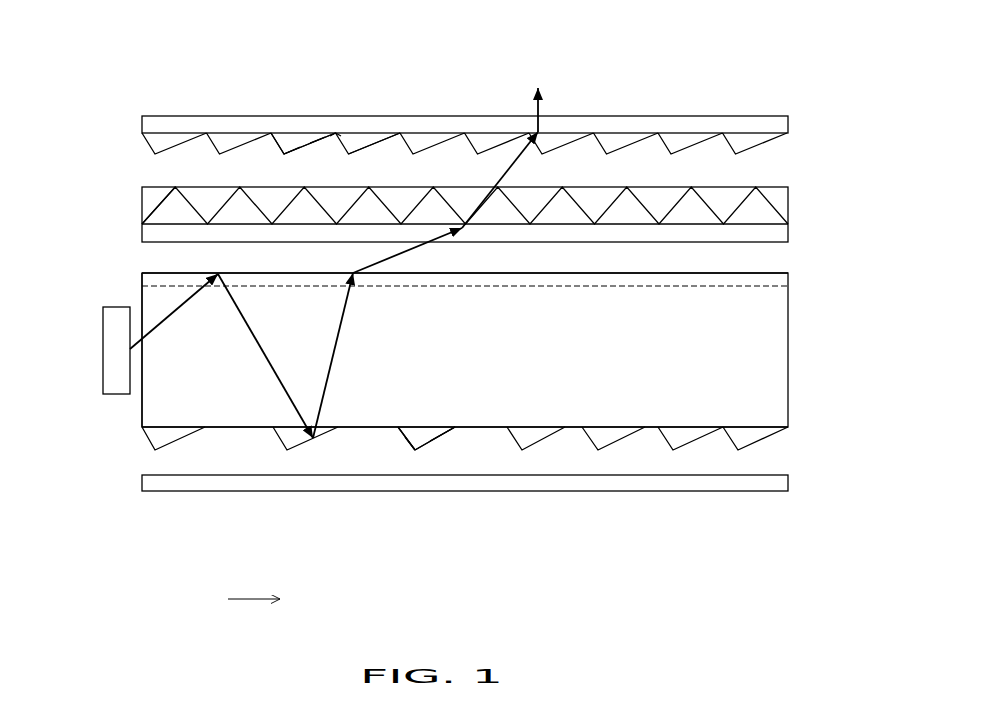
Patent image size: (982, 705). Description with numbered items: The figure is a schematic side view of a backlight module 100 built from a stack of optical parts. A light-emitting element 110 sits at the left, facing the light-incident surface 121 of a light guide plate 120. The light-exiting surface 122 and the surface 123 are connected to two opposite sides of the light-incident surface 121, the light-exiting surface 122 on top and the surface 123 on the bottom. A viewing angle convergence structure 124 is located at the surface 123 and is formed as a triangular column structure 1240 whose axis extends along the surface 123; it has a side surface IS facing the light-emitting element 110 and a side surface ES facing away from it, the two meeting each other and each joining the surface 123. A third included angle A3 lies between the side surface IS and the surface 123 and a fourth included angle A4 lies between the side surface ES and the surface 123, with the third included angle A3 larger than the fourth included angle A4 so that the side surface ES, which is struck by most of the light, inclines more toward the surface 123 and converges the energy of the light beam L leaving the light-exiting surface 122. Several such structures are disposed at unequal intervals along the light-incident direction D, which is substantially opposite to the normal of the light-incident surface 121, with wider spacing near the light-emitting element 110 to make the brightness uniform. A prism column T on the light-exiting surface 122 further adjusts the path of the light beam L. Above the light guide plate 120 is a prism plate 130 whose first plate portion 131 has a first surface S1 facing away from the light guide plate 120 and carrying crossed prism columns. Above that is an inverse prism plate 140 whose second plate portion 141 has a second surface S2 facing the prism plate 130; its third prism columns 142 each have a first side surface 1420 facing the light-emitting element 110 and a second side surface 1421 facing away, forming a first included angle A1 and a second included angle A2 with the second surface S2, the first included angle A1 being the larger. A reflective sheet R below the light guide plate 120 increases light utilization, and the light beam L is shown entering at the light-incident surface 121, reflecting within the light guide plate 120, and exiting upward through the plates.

The backlight module 100 is at (97, 56).
The light-emitting element 110 is at (108, 356).
The light guide plate 120 is at (790, 348).
The light-incident surface 121 is at (140, 408).
The light-exiting surface 122 is at (172, 287).
The surface 123 is at (233, 430).
The viewing angle convergence structure 124 is at (481, 507).
The triangular column structure 1240 is at (747, 440).
The prism plate 130 is at (790, 230).
The first plate portion 131 is at (143, 234).
The inverse prism plate 140 is at (790, 123).
The second plate portion 141 is at (138, 117).
The third prism columns 142 is at (140, 138).
The first side surface 1420 is at (270, 154).
The second side surface 1421 is at (316, 136).
The first included angle A1 is at (300, 153).
The second included angle A2 is at (321, 152).
The third included angle A3 is at (410, 447).
The fourth included angle A4 is at (449, 434).
The first surface S1 is at (178, 222).
The second surface S2 is at (373, 138).
The side surface IS is at (404, 443).
The side surface ES is at (437, 442).
The prism column T is at (790, 280).
The reflective sheet R is at (790, 484).
The light beam L is at (545, 106).
The light-incident direction D is at (254, 615).